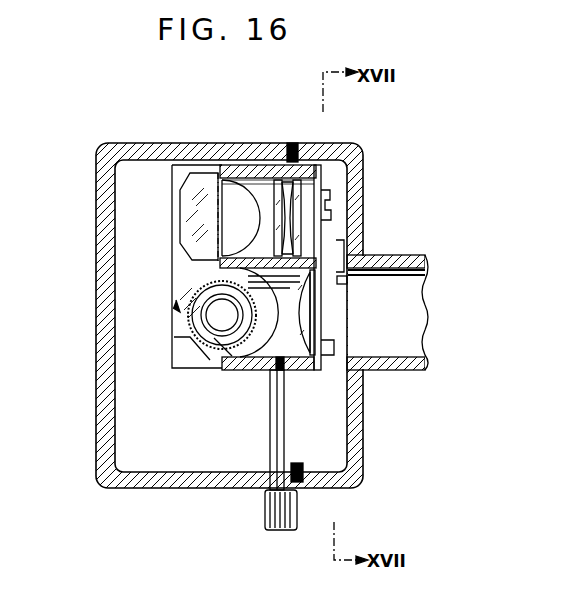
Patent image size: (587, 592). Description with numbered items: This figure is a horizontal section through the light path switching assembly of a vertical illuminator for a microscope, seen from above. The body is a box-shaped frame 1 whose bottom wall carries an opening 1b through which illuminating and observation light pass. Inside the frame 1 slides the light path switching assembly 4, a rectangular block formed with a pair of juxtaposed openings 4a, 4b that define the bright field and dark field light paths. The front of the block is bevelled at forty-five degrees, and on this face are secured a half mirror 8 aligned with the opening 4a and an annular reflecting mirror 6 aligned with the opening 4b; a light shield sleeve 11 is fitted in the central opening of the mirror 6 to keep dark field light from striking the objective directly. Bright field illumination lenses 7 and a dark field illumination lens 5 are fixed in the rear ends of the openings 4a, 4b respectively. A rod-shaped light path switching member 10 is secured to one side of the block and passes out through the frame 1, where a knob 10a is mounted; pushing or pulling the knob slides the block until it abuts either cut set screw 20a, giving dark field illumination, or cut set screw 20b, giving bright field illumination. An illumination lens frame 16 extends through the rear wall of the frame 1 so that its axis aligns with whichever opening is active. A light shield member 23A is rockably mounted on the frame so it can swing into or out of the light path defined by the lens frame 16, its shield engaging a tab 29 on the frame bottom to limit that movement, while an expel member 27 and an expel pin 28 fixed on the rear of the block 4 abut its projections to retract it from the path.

The frame 1 is at (98, 203).
The opening 1b is at (176, 302).
The light path switching assembly 4 is at (232, 178).
The opening 4a is at (252, 178).
The opening 4b is at (270, 351).
The dark field illumination lens 5 is at (300, 315).
The annular reflecting mirror 6 is at (182, 326).
The bright field illumination lenses 7 is at (285, 236).
The half mirror 8 is at (180, 212).
The light path switching member 10 is at (272, 432).
The knob 10a is at (265, 514).
The light shield sleeve 11 is at (198, 338).
The illumination lens frame 16 is at (380, 371).
The cut set screw 20a is at (297, 142).
The cut set screw 20b is at (298, 462).
The light shield member 23A is at (352, 257).
The expel member 27 is at (330, 218).
The expel pin 28 is at (334, 355).
The tab 29 is at (348, 280).